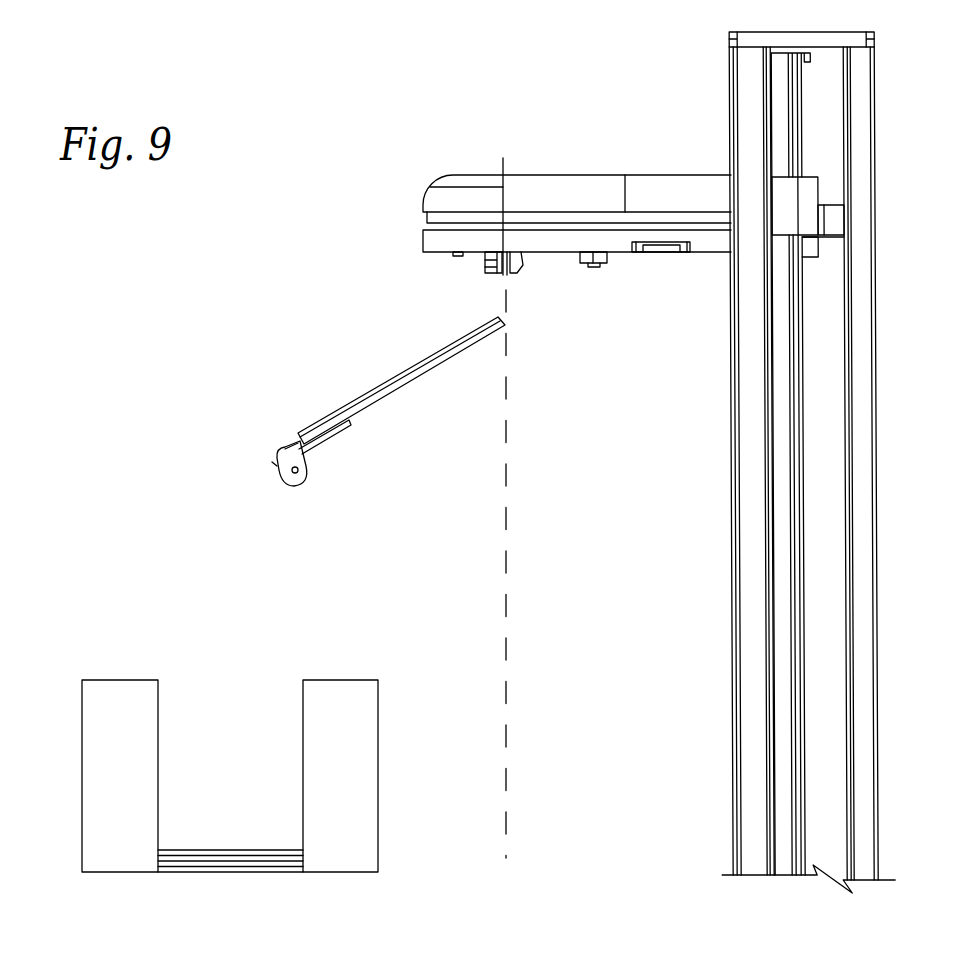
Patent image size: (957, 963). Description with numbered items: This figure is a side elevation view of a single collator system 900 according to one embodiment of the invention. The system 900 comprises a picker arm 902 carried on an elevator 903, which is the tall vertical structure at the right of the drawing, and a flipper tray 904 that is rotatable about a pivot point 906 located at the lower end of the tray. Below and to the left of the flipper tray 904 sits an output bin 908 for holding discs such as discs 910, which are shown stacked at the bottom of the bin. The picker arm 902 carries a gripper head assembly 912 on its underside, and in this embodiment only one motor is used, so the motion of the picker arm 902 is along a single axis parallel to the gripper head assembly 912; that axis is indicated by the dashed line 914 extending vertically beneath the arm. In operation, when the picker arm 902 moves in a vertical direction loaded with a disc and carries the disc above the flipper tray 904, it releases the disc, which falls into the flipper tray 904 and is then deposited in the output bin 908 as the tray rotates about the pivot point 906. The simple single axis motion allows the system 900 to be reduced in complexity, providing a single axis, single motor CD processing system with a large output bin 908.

The single collator system 900 is at (182, 312).
The picker arm 902 is at (532, 175).
The elevator 903 is at (874, 130).
The flipper tray 904 is at (397, 388).
The pivot point 906 is at (303, 482).
The output bin 908 is at (379, 705).
The discs 910 is at (222, 848).
The gripper head assembly 912 is at (518, 277).
The dashed line 914 is at (510, 735).